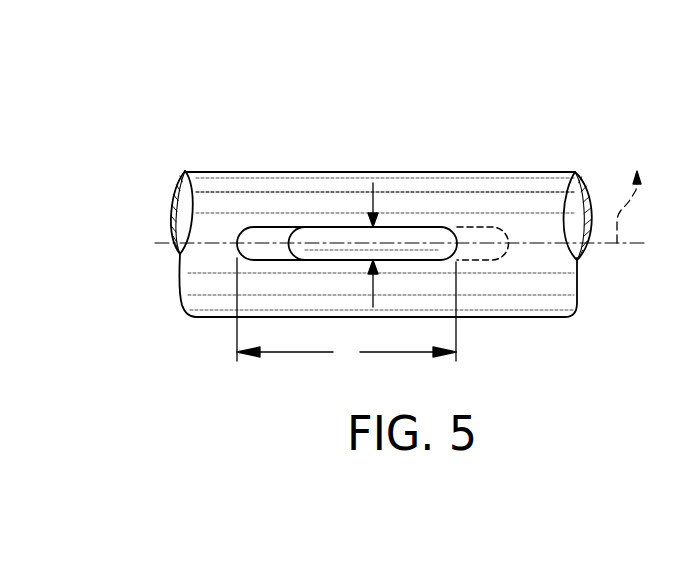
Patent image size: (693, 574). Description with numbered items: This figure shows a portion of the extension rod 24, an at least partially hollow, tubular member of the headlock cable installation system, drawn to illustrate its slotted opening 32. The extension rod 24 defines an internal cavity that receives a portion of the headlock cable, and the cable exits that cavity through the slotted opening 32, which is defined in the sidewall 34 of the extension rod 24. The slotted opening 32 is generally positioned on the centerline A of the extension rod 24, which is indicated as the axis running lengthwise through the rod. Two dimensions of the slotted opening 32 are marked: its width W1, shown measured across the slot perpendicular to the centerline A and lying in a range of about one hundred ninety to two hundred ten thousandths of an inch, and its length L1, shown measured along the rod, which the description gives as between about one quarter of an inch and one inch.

The extension rod 24 is at (559, 170).
The slotted opening 32 is at (403, 227).
The sidewall 34 is at (495, 195).
The width W1 is at (367, 193).
The length L1 is at (346, 315).
The centerline A is at (631, 192).